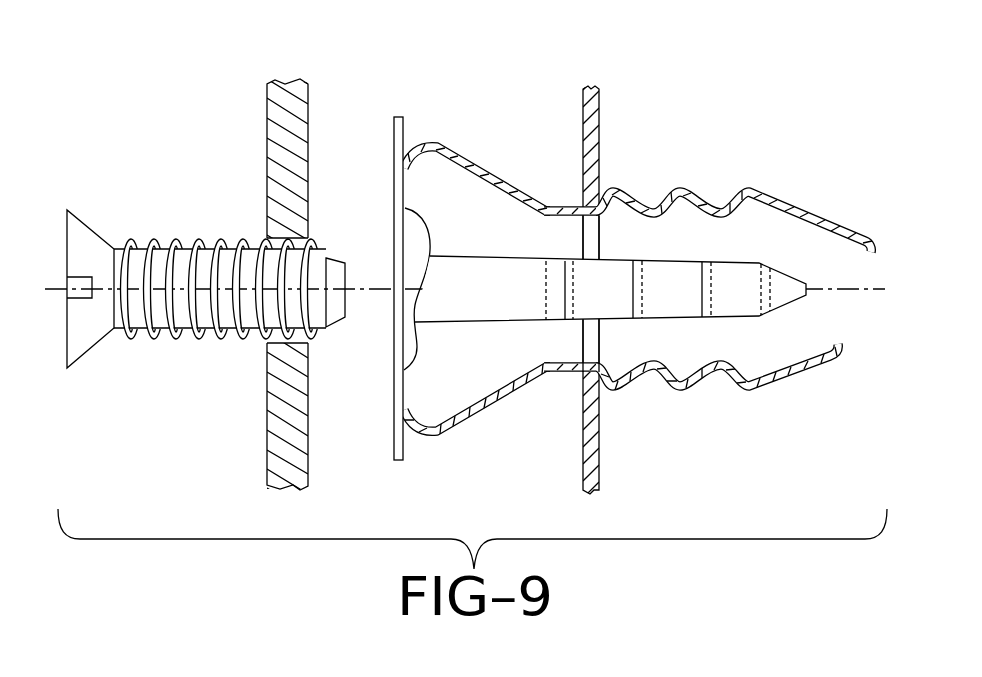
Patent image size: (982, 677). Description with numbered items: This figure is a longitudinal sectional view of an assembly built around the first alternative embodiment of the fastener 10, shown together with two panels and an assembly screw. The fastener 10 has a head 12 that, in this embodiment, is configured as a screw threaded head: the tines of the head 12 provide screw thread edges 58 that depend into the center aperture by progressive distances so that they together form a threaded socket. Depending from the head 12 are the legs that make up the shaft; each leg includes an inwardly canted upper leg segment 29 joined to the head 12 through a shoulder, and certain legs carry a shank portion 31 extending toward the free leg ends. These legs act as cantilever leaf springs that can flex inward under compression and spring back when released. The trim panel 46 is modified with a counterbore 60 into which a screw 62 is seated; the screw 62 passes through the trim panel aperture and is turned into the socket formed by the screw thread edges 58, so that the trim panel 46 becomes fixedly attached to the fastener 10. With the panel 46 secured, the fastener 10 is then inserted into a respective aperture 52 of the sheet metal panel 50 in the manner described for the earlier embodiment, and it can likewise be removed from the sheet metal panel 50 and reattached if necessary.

The fastener 10 is at (638, 247).
The head 12 is at (397, 122).
The upper leg segment 29 is at (479, 163).
The shank portion 31 is at (569, 212).
The trim panel 46 is at (268, 148).
The sheet metal panel 50 is at (599, 114).
The aperture 52 is at (592, 238).
The screw thread edges 58 is at (413, 232).
The counterbore 60 is at (276, 227).
The screw 62 is at (151, 243).